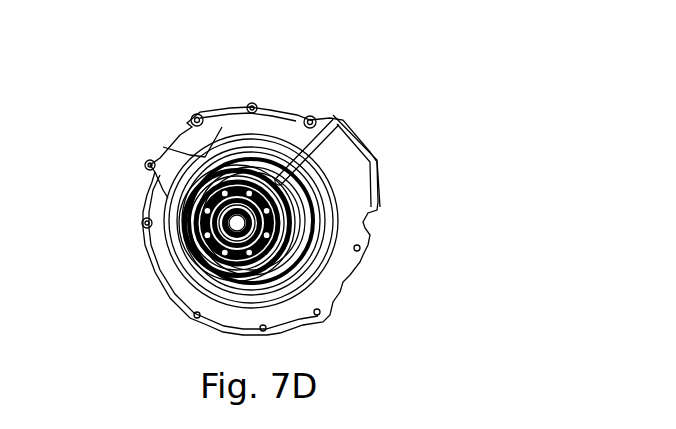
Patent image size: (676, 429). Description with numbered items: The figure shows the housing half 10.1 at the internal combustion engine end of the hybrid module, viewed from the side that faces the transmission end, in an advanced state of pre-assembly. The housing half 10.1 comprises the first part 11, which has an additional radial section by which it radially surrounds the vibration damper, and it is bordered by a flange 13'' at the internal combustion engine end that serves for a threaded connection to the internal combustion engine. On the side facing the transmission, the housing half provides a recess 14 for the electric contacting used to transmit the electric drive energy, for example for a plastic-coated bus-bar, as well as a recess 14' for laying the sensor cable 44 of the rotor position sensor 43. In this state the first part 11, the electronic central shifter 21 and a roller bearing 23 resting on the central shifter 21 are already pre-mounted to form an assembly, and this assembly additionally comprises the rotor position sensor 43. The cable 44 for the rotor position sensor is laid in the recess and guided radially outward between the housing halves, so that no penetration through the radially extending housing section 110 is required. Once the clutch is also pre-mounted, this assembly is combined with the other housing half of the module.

The housing half 10.1 is at (346, 97).
The first part 11 is at (346, 92).
The flange 13'' is at (230, 76).
The recess 14 is at (160, 141).
The recess 14' is at (380, 142).
The electronic central shifter 21 is at (238, 240).
The roller bearing 23 is at (290, 222).
The rotor position sensor 43 is at (244, 178).
The sensor cable 44 is at (300, 179).
The radially extending housing section 110 is at (306, 253).